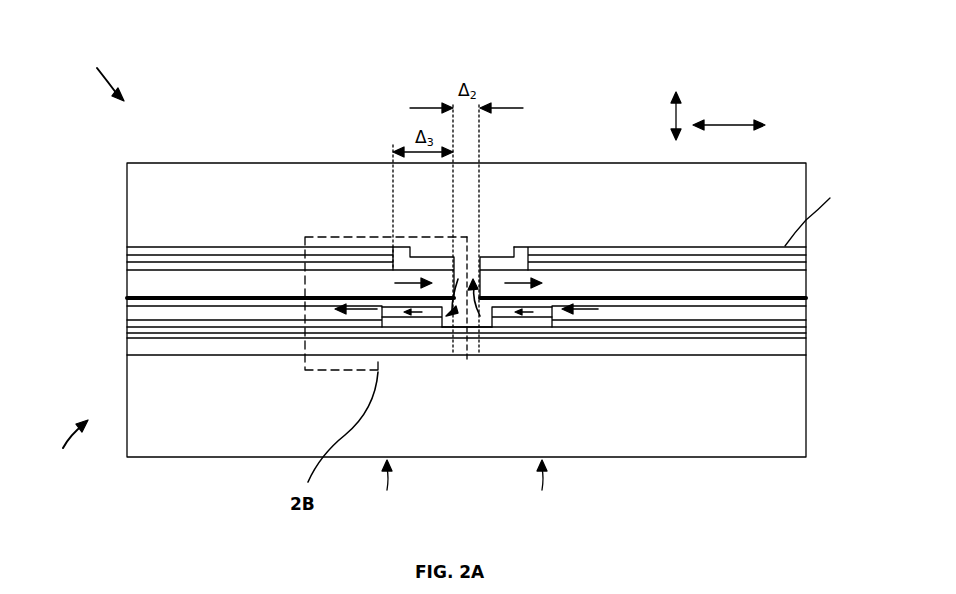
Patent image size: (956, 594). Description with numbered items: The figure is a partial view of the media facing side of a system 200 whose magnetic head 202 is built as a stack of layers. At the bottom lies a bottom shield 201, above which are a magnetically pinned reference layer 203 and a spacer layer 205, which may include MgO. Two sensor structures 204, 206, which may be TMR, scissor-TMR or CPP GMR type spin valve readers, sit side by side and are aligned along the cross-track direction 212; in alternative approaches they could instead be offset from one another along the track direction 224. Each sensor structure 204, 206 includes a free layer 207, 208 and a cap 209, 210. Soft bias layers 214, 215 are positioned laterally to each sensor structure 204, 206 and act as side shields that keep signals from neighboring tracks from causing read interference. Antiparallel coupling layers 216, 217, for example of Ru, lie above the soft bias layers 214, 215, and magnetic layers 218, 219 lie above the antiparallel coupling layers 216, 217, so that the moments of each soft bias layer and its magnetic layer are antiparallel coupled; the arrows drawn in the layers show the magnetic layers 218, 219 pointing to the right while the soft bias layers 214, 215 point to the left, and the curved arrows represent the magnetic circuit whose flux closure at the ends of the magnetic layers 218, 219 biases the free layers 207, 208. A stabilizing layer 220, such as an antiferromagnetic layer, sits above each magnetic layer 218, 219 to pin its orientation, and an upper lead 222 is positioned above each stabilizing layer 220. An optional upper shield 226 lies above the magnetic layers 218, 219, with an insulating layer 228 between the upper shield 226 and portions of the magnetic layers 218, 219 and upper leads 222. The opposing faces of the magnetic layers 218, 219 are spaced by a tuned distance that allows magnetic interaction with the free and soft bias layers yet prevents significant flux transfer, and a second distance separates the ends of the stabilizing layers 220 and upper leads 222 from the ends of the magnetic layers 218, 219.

The system 200 is at (103, 75).
The bottom shield 201 is at (466, 310).
The magnetic head 202 is at (65, 445).
The magnetically pinned reference layer 203 is at (127, 350).
The sensor structure 204 is at (386, 486).
The spacer layer 205 is at (806, 337).
The sensor structure 206 is at (541, 486).
The free layer 207 is at (396, 318).
The free layer 208 is at (530, 317).
The cap 209 is at (442, 315).
The cap 210 is at (555, 310).
The cross-track direction 212 is at (729, 116).
The soft bias layer 214 is at (127, 318).
The soft bias layer 215 is at (806, 310).
The antiparallel coupling layer 216 is at (127, 298).
The antiparallel coupling layer 217 is at (806, 298).
The magnetic layer 218 is at (331, 284).
The magnetic layer 219 is at (596, 284).
The stabilizing layer 220 is at (127, 262).
The upper lead 222 is at (127, 248).
The track direction 224 is at (658, 116).
The upper shield 226 is at (510, 212).
The insulating layer 228 is at (817, 213).